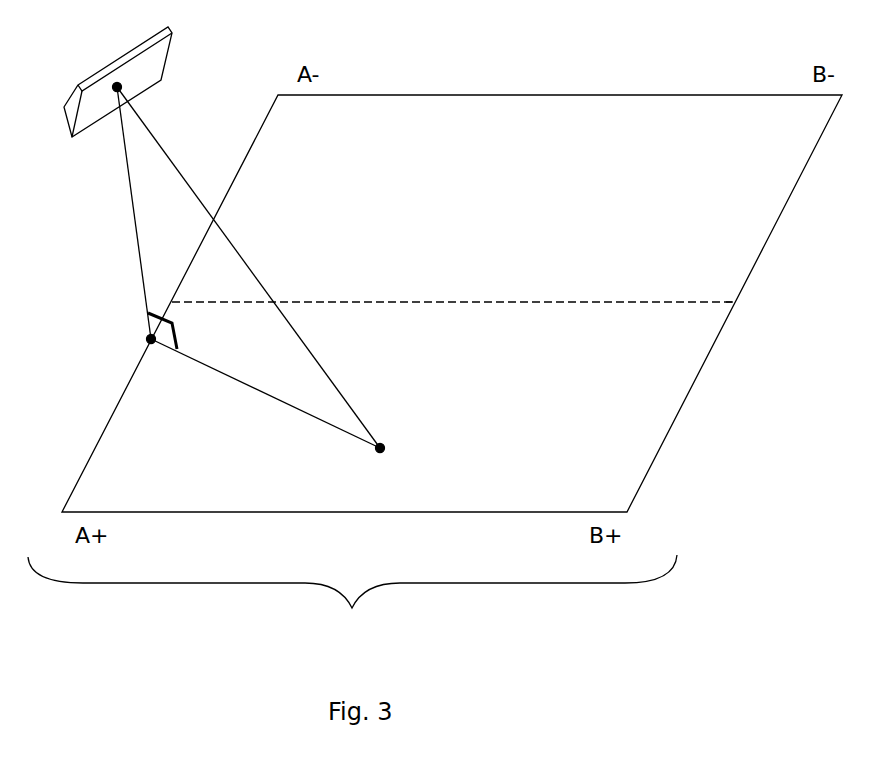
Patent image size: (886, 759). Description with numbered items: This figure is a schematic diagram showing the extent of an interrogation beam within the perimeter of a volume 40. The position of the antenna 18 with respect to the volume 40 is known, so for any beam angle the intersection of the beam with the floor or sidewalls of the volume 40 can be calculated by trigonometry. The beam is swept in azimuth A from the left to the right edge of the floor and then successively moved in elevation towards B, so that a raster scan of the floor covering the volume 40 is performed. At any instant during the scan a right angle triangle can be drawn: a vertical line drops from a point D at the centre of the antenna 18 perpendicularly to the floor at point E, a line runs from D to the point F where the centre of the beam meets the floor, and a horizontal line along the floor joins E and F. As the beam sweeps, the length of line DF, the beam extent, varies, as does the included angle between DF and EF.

The antenna 18 is at (68, 112).
The volume 40 is at (352, 602).
The point D is at (128, 85).
The point E is at (140, 338).
The point F is at (388, 463).
The azimuth A is at (452, 287).
The elevation B is at (722, 287).